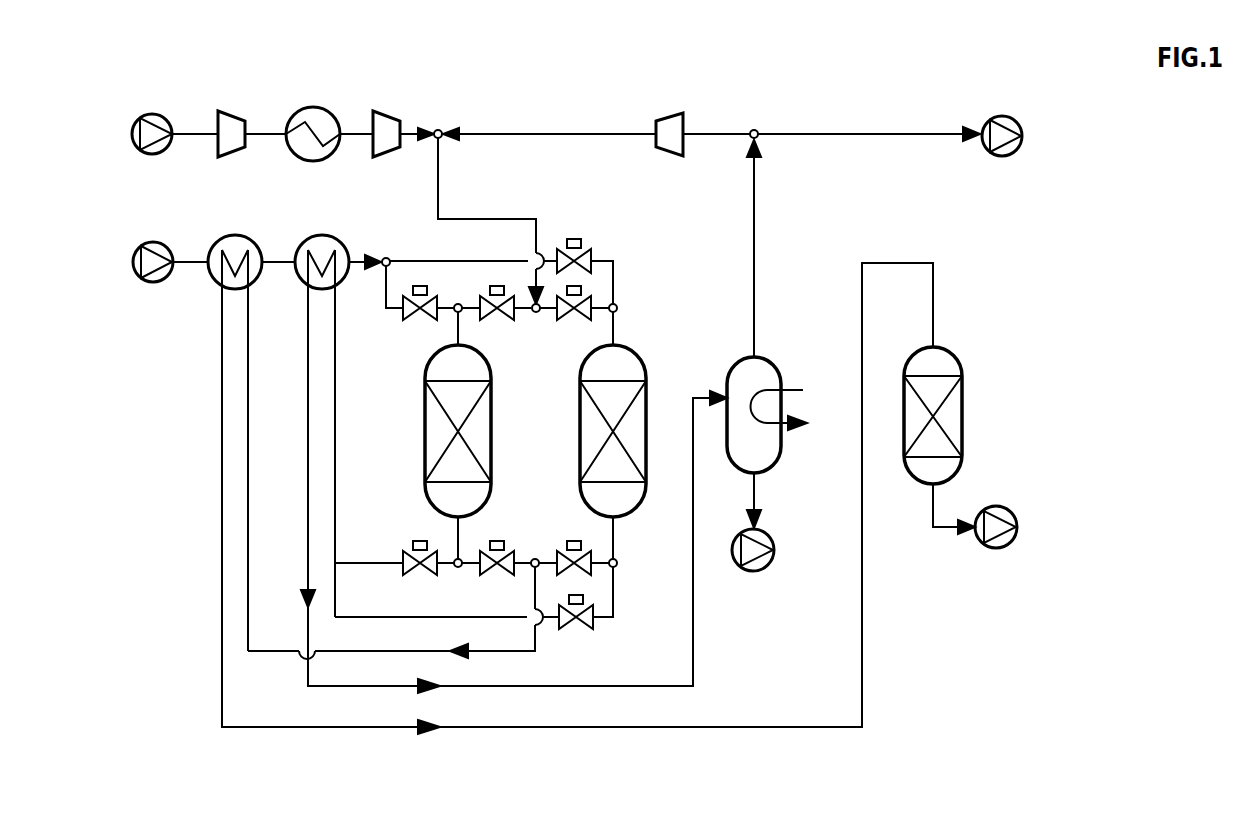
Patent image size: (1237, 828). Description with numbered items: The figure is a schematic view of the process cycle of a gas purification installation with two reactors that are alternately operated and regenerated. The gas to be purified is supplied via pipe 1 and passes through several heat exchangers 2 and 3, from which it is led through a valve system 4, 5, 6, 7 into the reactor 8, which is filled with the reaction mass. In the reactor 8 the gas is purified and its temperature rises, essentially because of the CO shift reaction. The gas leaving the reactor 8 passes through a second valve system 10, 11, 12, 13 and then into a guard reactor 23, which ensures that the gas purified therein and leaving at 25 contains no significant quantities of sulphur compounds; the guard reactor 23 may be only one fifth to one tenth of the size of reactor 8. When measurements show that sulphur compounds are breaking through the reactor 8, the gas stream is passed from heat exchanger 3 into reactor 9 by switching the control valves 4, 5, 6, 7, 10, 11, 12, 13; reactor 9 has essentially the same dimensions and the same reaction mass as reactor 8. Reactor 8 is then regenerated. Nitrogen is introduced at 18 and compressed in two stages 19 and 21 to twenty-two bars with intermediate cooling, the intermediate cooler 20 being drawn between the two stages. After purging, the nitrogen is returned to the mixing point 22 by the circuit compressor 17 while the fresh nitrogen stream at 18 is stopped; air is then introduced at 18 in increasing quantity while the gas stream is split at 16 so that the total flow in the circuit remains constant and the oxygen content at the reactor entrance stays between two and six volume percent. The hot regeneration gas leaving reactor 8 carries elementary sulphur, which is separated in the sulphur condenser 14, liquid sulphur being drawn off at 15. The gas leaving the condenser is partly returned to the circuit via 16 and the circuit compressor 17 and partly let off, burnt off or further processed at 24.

The pipe 1 is at (162, 243).
The heat exchanger 2 is at (230, 236).
The heat exchanger 3 is at (326, 236).
The control valve 4 is at (576, 239).
The control valve 5 is at (416, 320).
The control valve 6 is at (497, 318).
The control valve 7 is at (578, 318).
The reactor 8 is at (425, 443).
The reactor 9 is at (580, 440).
The control valve 10 is at (418, 541).
The control valve 11 is at (500, 541).
The control valve 12 is at (572, 541).
The control valve 13 is at (577, 628).
The sulphur condenser 14 is at (727, 370).
The liquid sulphur outlet 15 is at (772, 553).
The gas stream splitting point 16 is at (757, 130).
The circuit compressor 17 is at (668, 114).
The nitrogen and air inlet 18 is at (165, 115).
The first compression stage 19 is at (234, 112).
The heat exchanger 20 is at (318, 108).
The second compression stage 21 is at (388, 112).
The mixing point 22 is at (440, 129).
The guard reactor 23 is at (962, 376).
The gas let-off 24 is at (996, 156).
The purified gas outlet 25 is at (994, 548).